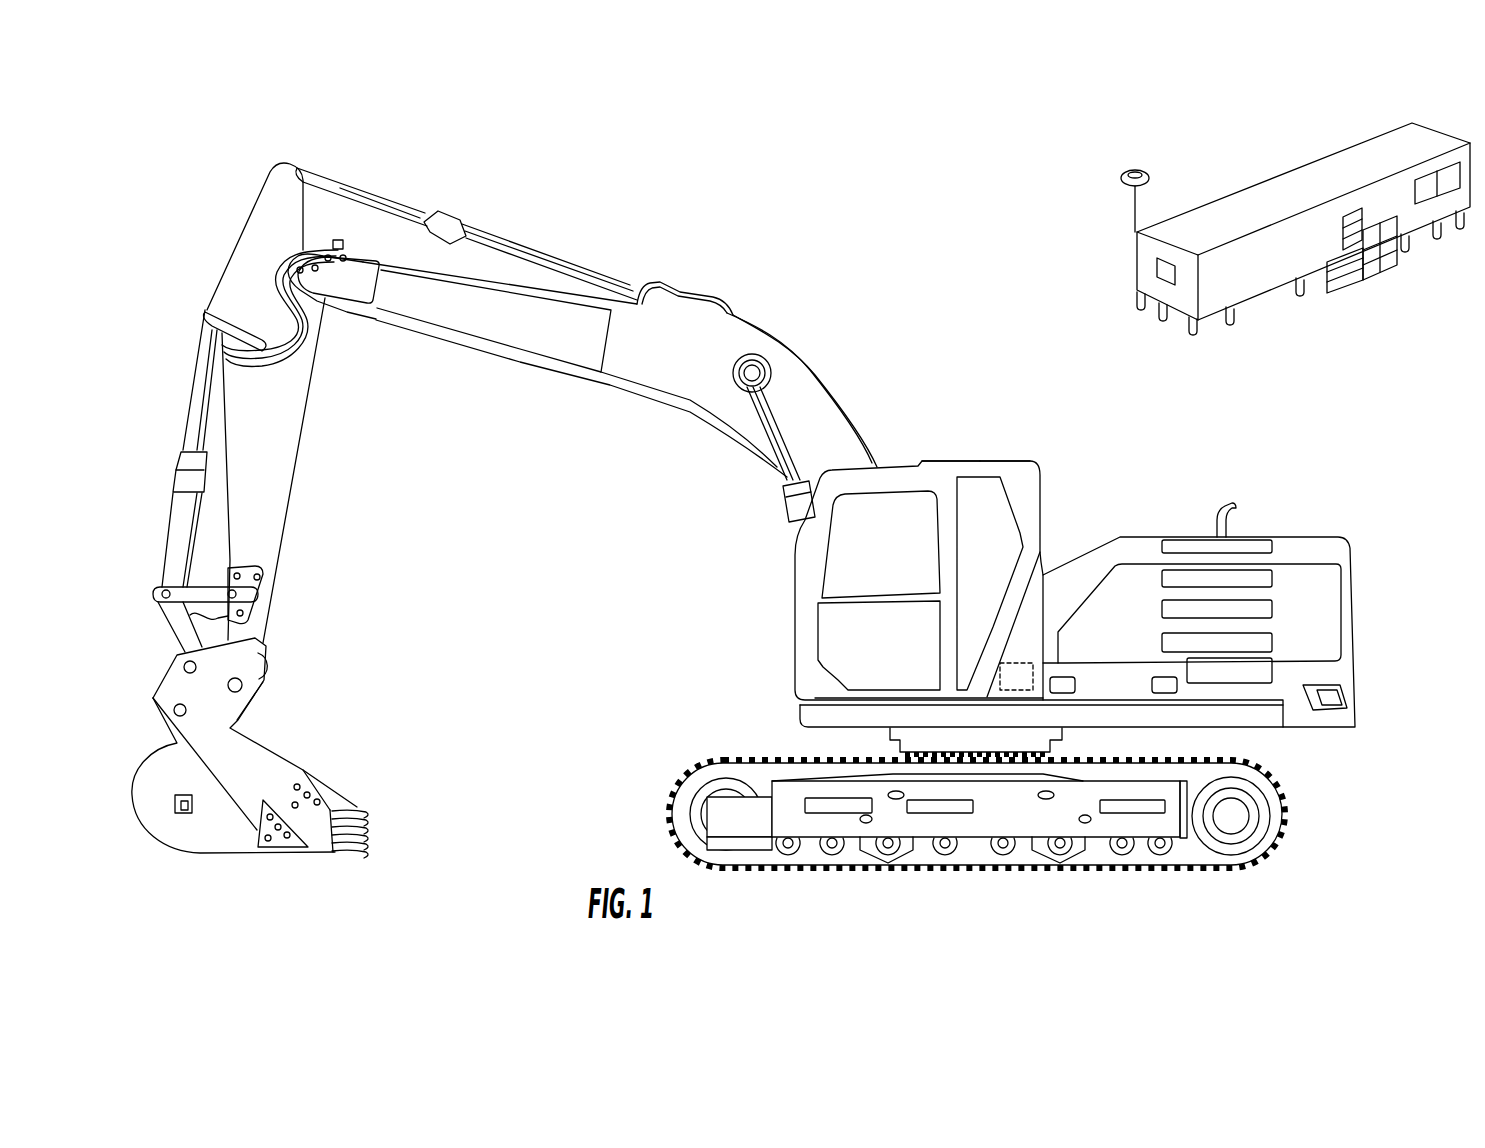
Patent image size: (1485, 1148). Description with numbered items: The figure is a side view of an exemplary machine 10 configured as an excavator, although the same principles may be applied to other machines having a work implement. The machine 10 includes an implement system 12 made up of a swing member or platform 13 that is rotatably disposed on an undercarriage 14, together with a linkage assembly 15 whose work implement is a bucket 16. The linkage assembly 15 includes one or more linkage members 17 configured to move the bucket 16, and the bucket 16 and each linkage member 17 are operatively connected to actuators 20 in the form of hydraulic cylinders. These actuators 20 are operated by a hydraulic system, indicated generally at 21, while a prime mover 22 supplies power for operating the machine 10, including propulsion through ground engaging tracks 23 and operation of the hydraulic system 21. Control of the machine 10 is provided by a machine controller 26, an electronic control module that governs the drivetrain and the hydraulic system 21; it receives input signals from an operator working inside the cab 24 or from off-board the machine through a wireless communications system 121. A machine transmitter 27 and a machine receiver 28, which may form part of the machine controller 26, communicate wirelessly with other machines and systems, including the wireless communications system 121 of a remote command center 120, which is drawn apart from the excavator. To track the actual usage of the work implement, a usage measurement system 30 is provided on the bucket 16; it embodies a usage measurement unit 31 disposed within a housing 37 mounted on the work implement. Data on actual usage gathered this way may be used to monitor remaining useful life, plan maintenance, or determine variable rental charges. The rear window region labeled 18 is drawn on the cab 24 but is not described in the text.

The machine 10 is at (776, 182).
The implement system 12 is at (914, 325).
The swing member or platform 13 is at (1258, 718).
The undercarriage 14 is at (1102, 828).
The linkage assembly 15 is at (826, 305).
The bucket 16 is at (272, 745).
The linkage member 17 is at (823, 410).
The operator cab 18 is at (985, 487).
The actuator 20 is at (553, 260).
The hydraulic system 21 is at (1167, 495).
The prime mover 22 is at (1233, 485).
The tracks 23 is at (728, 863).
The cab 24 is at (898, 530).
The machine controller 26 is at (1035, 660).
The machine transmitter 27 is at (951, 412).
The machine receiver 28 is at (991, 412).
The usage measurement system 30 is at (150, 858).
The usage measurement unit 31 is at (180, 813).
The housing 37 is at (175, 798).
The command center 120 is at (1303, 172).
The wireless communications system 121 is at (1110, 162).